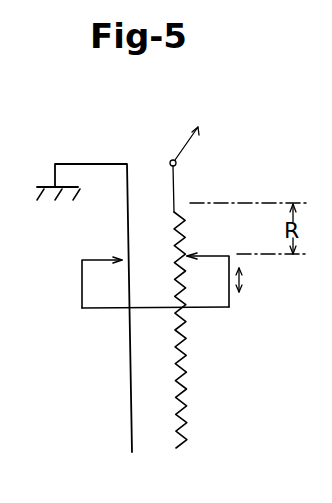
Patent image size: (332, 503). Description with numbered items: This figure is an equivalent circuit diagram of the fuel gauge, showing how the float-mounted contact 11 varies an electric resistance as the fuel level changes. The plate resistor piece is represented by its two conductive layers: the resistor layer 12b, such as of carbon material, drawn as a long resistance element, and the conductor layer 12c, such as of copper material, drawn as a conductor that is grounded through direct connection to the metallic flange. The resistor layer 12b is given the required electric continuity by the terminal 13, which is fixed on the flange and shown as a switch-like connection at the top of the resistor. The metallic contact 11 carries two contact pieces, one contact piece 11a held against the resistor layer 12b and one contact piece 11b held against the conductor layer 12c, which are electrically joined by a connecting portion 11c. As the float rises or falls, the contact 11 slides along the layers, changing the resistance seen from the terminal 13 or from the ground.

The contact 11 is at (141, 307).
The contact piece 11a is at (232, 308).
The contact piece 11b is at (82, 291).
The connecting portion 11c is at (95, 310).
The resistor layer 12b is at (184, 232).
The conductor layer 12c is at (127, 230).
The terminal 13 is at (178, 163).